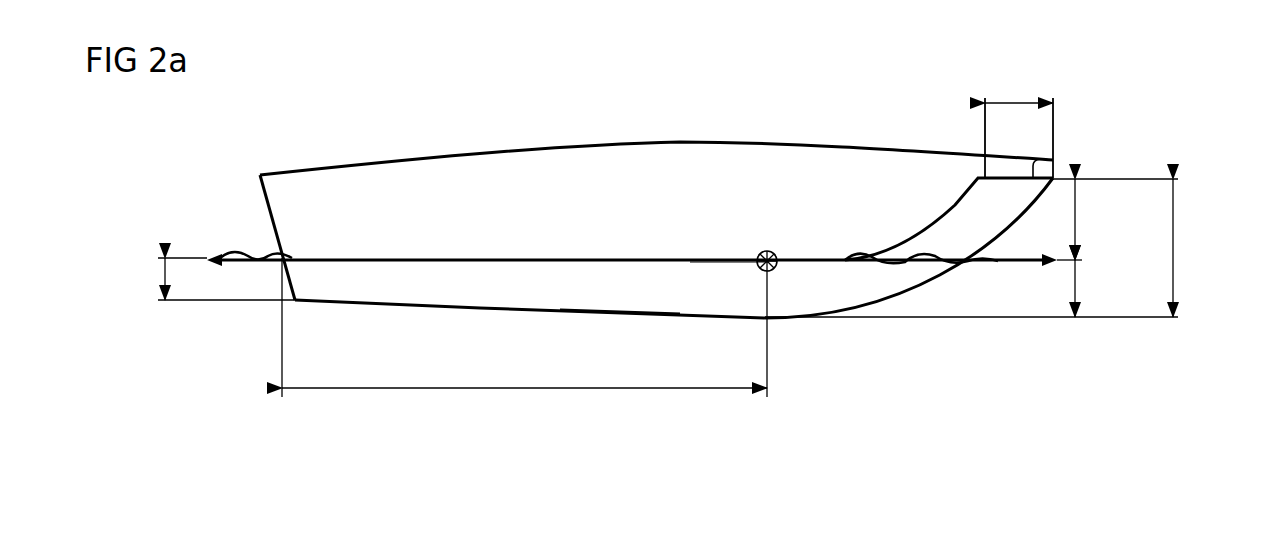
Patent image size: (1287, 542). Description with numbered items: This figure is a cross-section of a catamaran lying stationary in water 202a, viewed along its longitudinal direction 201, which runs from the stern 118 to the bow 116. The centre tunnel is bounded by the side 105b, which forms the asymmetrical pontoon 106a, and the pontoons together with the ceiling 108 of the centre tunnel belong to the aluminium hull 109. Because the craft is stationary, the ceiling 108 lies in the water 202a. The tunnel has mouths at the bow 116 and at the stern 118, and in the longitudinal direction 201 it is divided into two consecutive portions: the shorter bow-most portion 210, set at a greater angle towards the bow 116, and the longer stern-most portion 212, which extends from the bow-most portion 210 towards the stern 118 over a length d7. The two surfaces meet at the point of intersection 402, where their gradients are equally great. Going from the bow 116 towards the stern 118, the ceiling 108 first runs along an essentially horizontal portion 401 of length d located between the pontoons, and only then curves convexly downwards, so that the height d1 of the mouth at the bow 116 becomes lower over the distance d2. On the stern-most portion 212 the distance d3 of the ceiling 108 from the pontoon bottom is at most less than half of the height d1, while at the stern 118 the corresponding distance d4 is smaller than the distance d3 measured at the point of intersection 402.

The stern 118 is at (300, 146).
The pontoon 106a is at (503, 312).
The longitudinal direction 201 is at (1033, 265).
The bow-most portion 210 is at (880, 238).
The stern-most portion 212 is at (566, 248).
The water 202a is at (258, 256).
The point of intersection 402 is at (764, 251).
The bow 116 is at (1001, 146).
The essentially horizontal portion 401 is at (1040, 159).
The length of the essentially horizontal portion d is at (1020, 98).
The height of the mouth of the centre tunnel d1 is at (1175, 252).
The distance over which the mouth height becomes lower d2 is at (1077, 222).
The distance of the centre tunnel from the bottom of the pontoons d3 is at (1077, 292).
The distance of the ceiling from the bottom of the pontoons at the stern d4 is at (160, 280).
The length of the stern-most portion d7 is at (542, 390).
The side of the centre tunnel 105b is at (620, 292).
The ceiling of the centre tunnel 108 is at (698, 263).
The hull 109 is at (801, 350).